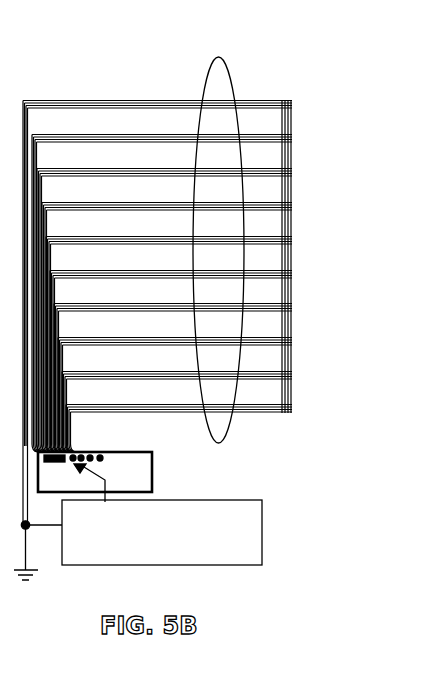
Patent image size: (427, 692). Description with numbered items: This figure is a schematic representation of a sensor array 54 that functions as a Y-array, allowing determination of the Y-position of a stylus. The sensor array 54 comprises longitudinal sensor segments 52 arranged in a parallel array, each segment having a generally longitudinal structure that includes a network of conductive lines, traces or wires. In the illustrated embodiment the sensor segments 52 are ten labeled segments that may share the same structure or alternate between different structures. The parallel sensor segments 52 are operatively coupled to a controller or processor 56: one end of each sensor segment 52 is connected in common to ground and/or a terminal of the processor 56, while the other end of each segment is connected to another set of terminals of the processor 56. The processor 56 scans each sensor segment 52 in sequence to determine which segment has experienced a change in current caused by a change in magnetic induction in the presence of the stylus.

The sensor segments 52 is at (233, 70).
The sensor array 54 is at (298, 240).
The controller or processor 56 is at (152, 470).